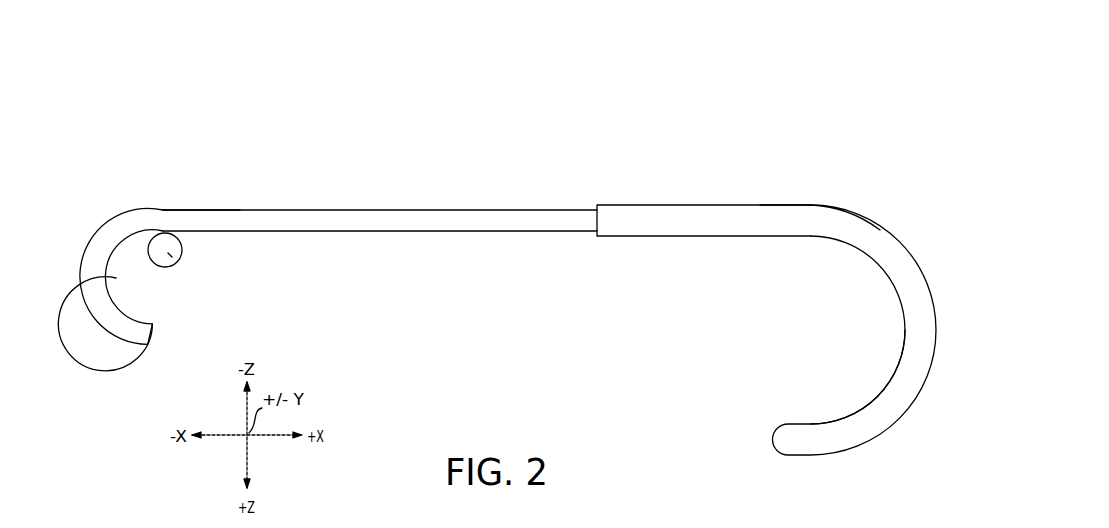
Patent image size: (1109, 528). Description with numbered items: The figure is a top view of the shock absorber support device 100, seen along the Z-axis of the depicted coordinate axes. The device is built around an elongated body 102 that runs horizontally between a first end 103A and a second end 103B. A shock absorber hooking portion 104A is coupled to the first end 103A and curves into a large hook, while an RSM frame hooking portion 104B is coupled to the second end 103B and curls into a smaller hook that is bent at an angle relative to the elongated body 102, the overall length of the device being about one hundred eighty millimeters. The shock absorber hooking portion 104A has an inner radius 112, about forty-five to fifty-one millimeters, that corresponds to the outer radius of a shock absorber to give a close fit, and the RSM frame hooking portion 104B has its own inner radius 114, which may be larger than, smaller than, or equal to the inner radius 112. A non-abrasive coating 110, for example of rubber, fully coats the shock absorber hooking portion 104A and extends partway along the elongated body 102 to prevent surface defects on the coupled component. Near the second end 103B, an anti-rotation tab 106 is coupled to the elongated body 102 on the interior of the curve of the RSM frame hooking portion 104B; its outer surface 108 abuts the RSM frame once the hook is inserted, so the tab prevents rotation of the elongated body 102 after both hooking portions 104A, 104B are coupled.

The shock absorber support device 100 is at (522, 262).
The elongated body 102 is at (410, 210).
The first end 103A is at (820, 166).
The second end 103B is at (209, 159).
The shock absorber hooking portion 104A is at (879, 339).
The RSM frame hooking portion 104B is at (115, 242).
The anti-rotation tab 106 is at (170, 255).
The outer surface 108 is at (182, 245).
The non-abrasive coating 110 is at (687, 204).
The inner radius 112 is at (868, 390).
The inner radius 114 is at (136, 308).